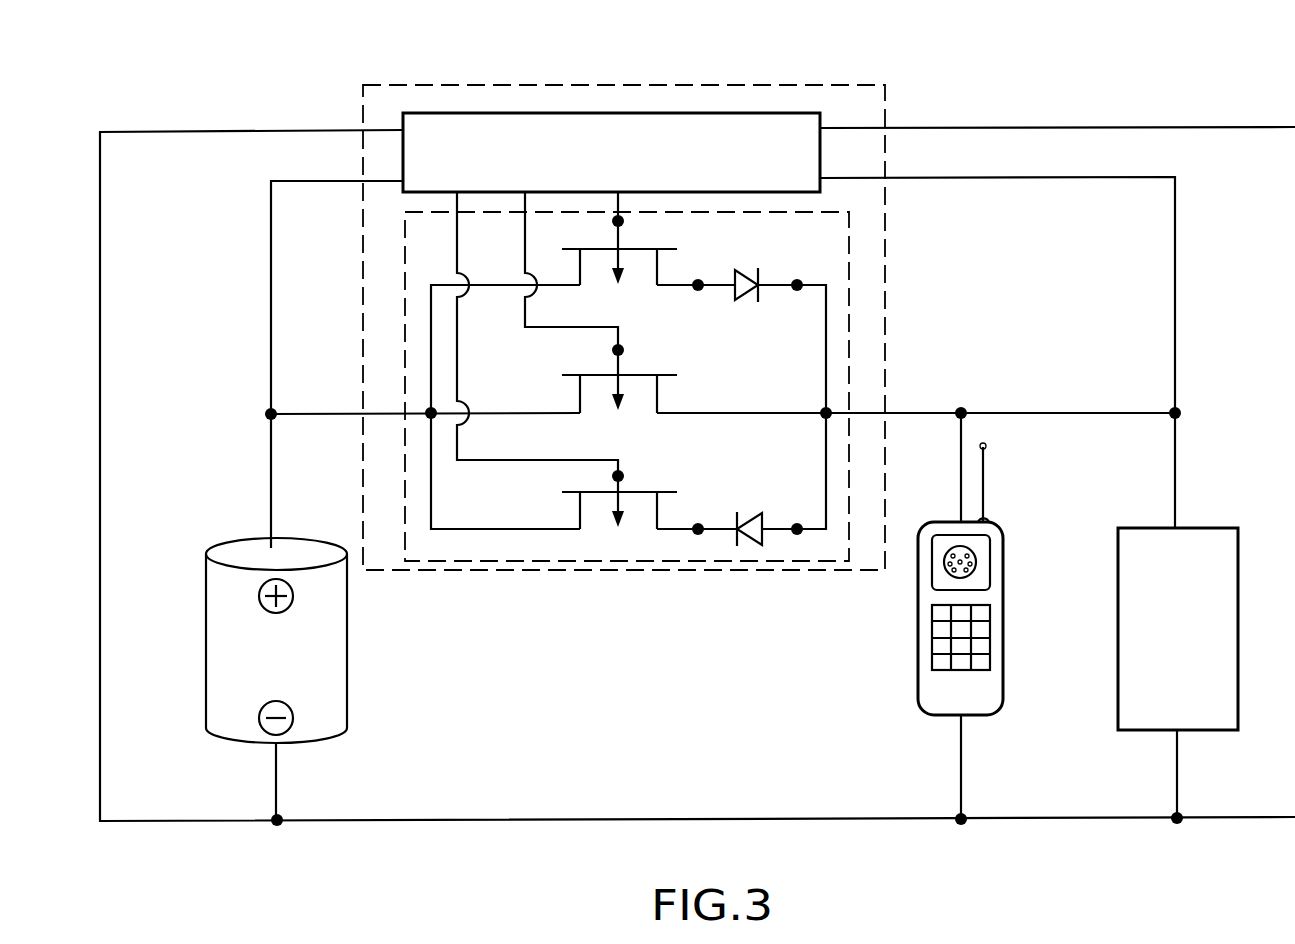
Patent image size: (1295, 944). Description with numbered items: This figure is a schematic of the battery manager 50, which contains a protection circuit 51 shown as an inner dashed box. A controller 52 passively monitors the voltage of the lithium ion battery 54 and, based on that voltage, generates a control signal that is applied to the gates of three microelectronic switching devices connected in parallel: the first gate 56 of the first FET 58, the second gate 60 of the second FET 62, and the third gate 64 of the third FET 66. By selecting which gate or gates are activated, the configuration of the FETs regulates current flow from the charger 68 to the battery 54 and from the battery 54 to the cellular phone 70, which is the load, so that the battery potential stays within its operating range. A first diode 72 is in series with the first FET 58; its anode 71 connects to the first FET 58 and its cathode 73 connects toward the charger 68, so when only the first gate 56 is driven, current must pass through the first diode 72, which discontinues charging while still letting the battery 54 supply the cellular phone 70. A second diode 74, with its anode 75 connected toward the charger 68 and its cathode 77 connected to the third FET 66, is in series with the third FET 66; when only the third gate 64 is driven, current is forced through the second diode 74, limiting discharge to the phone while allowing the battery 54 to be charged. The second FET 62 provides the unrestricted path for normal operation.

The battery manager 50 is at (605, 84).
The protection circuit 51 is at (622, 563).
The controller 52 is at (740, 128).
The battery 54 is at (333, 650).
The first gate 56 is at (618, 221).
The first FET 58 is at (640, 248).
The second gate 60 is at (618, 350).
The second FET 62 is at (667, 373).
The third gate 64 is at (618, 476).
The third FET 66 is at (673, 492).
The charger 68 is at (1143, 528).
The cellular phone 70 is at (982, 705).
The anode 71 is at (698, 285).
The first diode 72 is at (737, 297).
The cathode 73 is at (797, 285).
The second diode 74 is at (748, 540).
The anode 75 is at (797, 529).
The cathode 77 is at (698, 529).